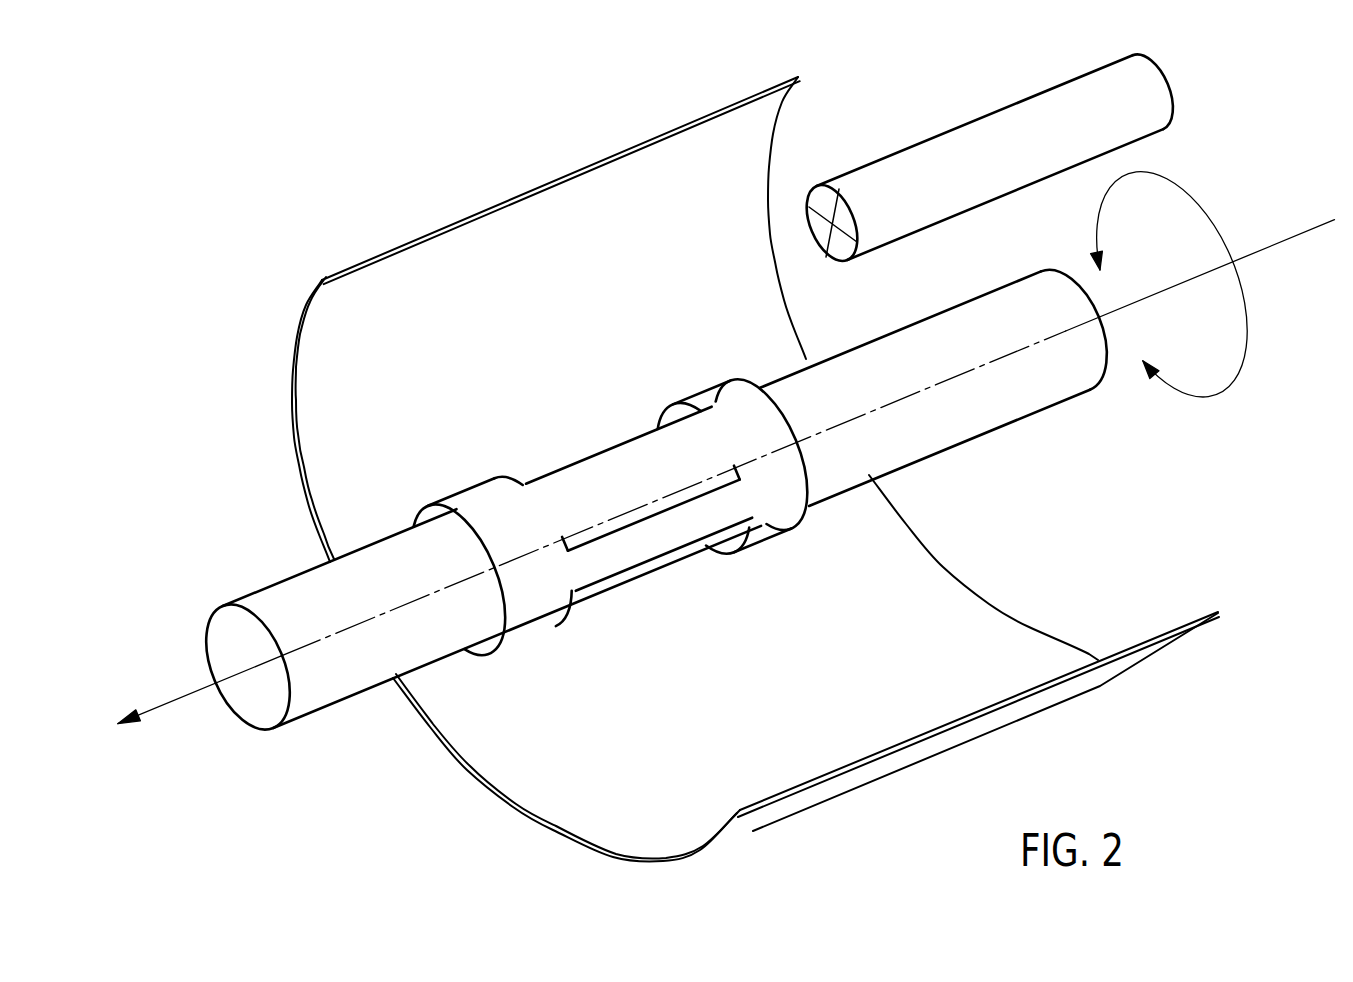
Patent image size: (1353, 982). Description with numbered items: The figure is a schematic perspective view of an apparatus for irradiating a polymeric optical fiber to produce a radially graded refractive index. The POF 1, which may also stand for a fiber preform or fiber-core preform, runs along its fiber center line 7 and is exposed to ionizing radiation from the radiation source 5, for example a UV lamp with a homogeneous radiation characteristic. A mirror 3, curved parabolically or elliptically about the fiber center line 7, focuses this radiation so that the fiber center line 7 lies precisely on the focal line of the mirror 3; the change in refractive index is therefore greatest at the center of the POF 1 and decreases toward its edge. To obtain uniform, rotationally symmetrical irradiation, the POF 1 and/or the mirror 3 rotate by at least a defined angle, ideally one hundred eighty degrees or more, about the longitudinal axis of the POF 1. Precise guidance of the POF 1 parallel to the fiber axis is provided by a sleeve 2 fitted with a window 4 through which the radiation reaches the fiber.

The POF 1 is at (249, 710).
The sleeve 2 is at (538, 626).
The mirror 3 is at (510, 217).
The window 4 is at (598, 465).
The radiation source 5 is at (1157, 101).
The fiber center line 7 is at (967, 373).